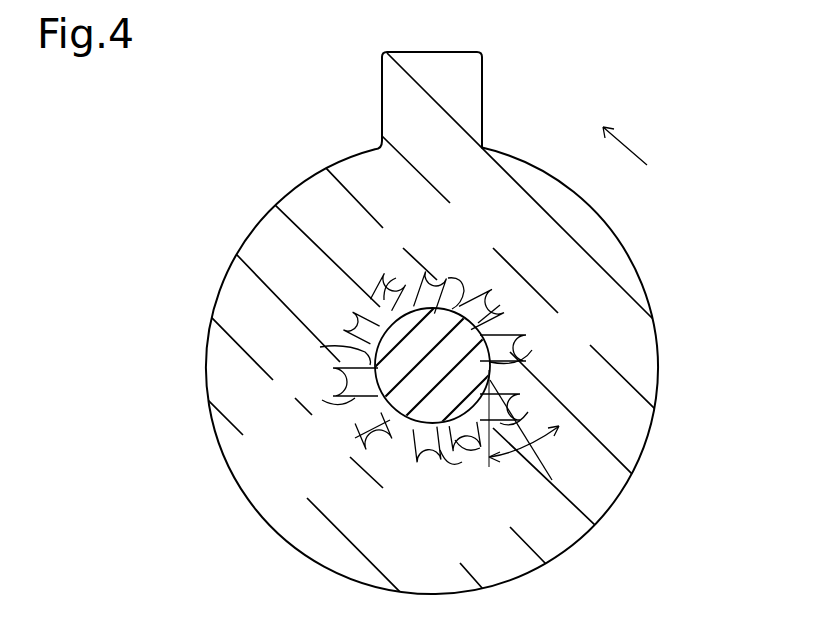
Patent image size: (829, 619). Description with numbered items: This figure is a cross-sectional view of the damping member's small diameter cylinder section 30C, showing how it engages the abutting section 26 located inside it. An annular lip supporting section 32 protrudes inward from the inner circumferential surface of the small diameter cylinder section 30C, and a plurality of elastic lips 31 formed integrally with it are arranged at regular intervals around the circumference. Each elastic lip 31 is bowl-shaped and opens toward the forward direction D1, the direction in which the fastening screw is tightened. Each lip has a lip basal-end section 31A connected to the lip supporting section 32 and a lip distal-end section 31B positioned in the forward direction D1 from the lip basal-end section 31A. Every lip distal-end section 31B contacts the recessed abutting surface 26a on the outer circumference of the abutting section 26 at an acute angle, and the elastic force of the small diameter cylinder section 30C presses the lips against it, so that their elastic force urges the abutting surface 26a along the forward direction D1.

The small diameter cylinder section 30C is at (525, 164).
The forward direction D1 is at (632, 138).
The abutting section 26 is at (345, 338).
The abutting surface 26a is at (517, 340).
The elastic lips 31 is at (392, 371).
The lip basal-end section 31A is at (497, 288).
The lip distal-end section 31B is at (540, 221).
The lip supporting section 32 is at (378, 285).